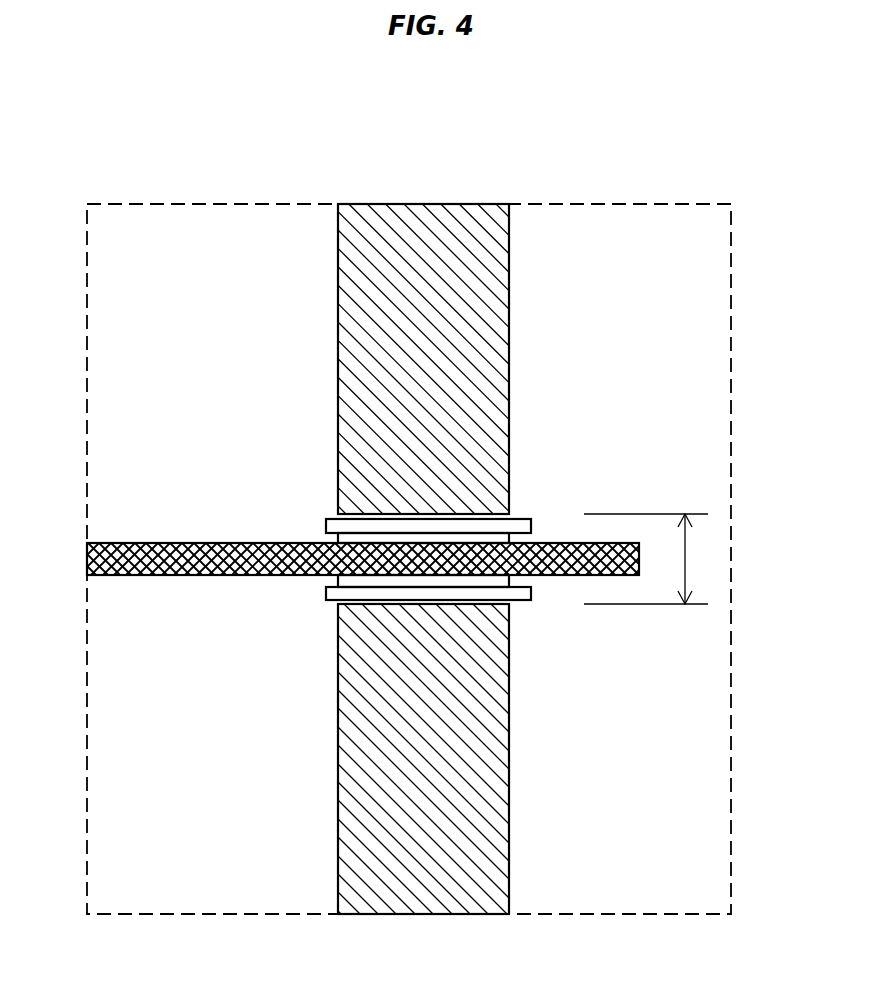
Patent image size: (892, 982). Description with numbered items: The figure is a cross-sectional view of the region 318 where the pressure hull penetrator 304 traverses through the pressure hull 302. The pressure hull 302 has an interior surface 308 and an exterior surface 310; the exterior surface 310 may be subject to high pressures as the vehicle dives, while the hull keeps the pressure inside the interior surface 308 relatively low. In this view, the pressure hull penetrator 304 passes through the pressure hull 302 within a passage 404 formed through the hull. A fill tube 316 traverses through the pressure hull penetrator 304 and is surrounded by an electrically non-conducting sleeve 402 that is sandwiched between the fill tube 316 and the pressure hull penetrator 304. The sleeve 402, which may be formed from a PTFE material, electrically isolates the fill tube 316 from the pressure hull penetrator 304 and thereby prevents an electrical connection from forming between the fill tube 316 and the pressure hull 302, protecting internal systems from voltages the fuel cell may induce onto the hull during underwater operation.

The pressure hull 302 is at (490, 328).
The pressure hull penetrator 304 is at (327, 593).
The interior surface 308 is at (312, 350).
The exterior surface 310 is at (567, 777).
The fill tube 316 is at (167, 543).
The region 318 is at (665, 204).
The electrically non-conducting sleeve 402 is at (340, 538).
The passage 404 is at (685, 568).